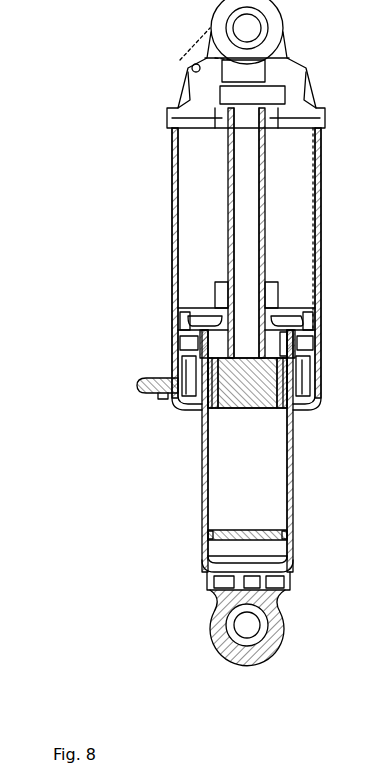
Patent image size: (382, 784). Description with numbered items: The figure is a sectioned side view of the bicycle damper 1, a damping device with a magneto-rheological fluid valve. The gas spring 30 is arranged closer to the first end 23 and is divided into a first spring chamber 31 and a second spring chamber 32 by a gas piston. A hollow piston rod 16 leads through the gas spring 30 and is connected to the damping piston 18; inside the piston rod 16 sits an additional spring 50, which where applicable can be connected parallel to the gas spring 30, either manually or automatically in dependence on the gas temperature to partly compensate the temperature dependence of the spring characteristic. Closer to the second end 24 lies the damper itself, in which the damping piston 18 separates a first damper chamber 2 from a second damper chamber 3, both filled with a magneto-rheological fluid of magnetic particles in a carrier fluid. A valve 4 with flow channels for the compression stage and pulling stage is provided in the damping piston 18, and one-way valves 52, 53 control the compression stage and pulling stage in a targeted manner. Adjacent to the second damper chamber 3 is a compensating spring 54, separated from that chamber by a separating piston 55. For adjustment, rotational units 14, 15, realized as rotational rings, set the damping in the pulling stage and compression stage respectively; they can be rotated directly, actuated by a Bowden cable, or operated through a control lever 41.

The damping device 1 is at (219, 333).
The first end 23 is at (205, 14).
The second end 24 is at (195, 630).
The gas spring 30 is at (292, 215).
The first spring chamber 31 is at (292, 244).
The piston rod 16 is at (228, 247).
The additional spring 50 is at (228, 214).
The first damper chamber 2 is at (178, 318).
The second spring chamber 32 is at (320, 330).
The one-way valve 52 is at (178, 340).
The one-way valve 53 is at (325, 335).
The rotational unit 14 is at (160, 368).
The rotational unit 15 is at (165, 404).
The control lever 41 is at (137, 386).
The second damper chamber 3 is at (228, 503).
The valve 4 is at (200, 434).
The damping piston 18 is at (246, 425).
The separating piston 55 is at (205, 538).
The compensating spring 54 is at (200, 556).